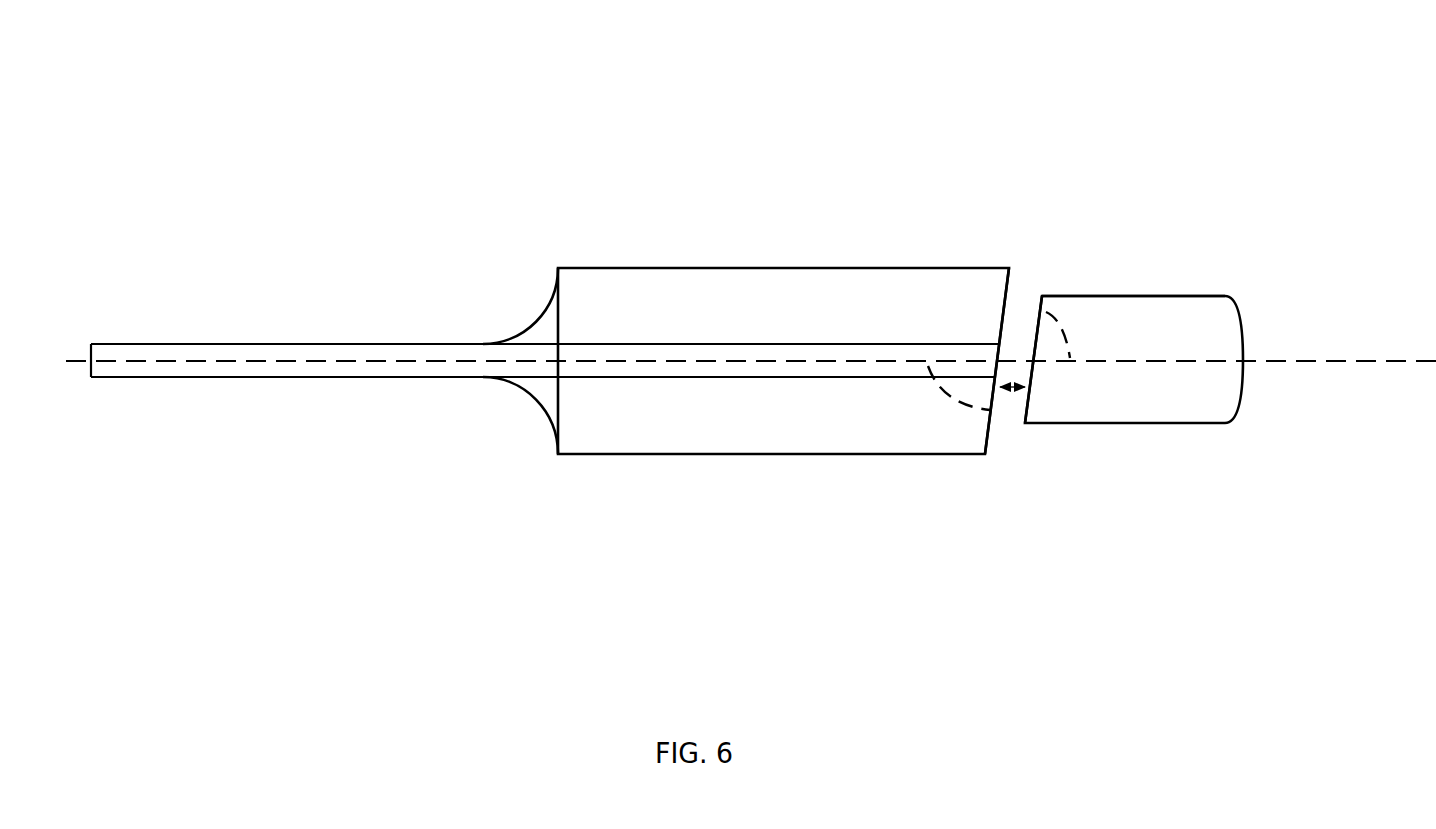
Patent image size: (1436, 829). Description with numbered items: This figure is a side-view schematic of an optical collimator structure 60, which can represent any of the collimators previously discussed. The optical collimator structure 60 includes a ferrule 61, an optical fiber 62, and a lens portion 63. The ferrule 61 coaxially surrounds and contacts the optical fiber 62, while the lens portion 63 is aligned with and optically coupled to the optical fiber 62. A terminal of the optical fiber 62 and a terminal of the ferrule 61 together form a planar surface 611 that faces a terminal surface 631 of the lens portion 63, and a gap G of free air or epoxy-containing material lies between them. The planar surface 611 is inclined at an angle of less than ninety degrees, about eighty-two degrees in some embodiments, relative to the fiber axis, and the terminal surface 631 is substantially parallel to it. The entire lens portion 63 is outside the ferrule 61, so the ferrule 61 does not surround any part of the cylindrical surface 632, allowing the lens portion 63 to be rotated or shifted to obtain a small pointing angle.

The optical collimator structure 60 is at (738, 89).
The ferrule 61 is at (796, 266).
The planar surface 611 is at (1012, 292).
The optical fiber 62 is at (362, 341).
The lens portion 63 is at (1185, 330).
The terminal surface 631 is at (1035, 372).
The cylindrical surface 632 is at (1113, 294).
The gap G is at (1012, 408).